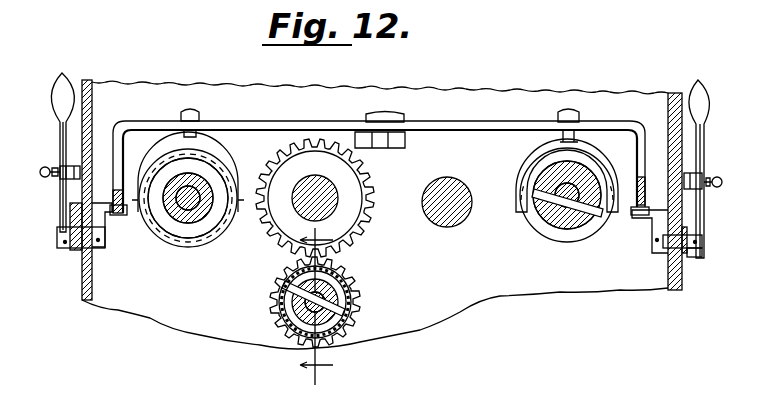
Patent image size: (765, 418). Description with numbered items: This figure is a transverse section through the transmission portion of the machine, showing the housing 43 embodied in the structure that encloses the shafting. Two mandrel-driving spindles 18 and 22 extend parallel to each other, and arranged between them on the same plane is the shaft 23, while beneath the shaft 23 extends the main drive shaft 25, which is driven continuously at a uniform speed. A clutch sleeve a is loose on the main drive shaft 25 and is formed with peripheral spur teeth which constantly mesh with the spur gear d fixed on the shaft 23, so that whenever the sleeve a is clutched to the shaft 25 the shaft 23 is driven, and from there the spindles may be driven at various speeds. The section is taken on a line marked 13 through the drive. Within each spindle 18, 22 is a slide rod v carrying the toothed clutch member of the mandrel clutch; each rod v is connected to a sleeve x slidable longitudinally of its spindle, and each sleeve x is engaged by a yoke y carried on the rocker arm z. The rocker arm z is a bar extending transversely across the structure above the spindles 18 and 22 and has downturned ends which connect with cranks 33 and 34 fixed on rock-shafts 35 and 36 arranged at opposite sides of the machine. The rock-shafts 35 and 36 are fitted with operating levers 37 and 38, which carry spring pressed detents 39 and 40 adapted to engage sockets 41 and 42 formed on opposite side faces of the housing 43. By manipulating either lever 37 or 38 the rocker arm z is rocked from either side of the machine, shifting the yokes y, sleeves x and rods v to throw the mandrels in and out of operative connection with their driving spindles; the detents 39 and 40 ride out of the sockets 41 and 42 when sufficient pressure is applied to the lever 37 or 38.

The housing 43 is at (648, 66).
The operating lever 37 is at (59, 144).
The operating lever 38 is at (706, 124).
The spring pressed detent 39 is at (62, 178).
The spring pressed detent 40 is at (700, 176).
The socket 41 is at (72, 181).
The socket 42 is at (688, 190).
The crank 33 is at (110, 216).
The crank 34 is at (651, 226).
The rock-shaft 35 is at (78, 248).
The rock-shaft 36 is at (688, 256).
The rocker arm z is at (434, 121).
The yoke y is at (236, 141).
The sleeve x is at (170, 236).
The slide rod v is at (208, 216).
The spindle 18 is at (190, 222).
The spindle 22 is at (557, 226).
The shaft 23 is at (333, 194).
The spur gear d is at (366, 220).
The section line 13 is at (319, 310).
The main drive shaft 25 is at (338, 289).
The clutch sleeve a is at (352, 302).